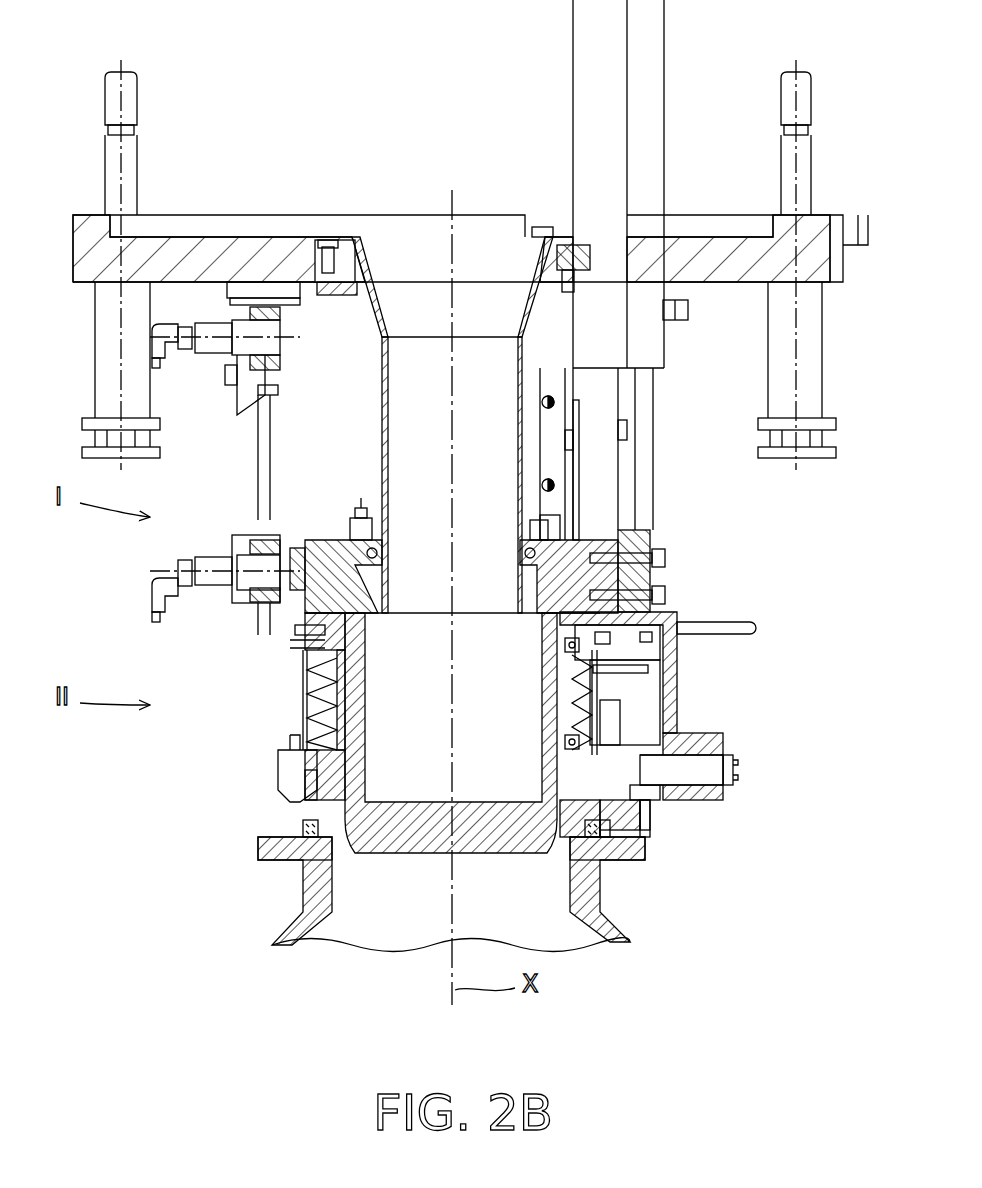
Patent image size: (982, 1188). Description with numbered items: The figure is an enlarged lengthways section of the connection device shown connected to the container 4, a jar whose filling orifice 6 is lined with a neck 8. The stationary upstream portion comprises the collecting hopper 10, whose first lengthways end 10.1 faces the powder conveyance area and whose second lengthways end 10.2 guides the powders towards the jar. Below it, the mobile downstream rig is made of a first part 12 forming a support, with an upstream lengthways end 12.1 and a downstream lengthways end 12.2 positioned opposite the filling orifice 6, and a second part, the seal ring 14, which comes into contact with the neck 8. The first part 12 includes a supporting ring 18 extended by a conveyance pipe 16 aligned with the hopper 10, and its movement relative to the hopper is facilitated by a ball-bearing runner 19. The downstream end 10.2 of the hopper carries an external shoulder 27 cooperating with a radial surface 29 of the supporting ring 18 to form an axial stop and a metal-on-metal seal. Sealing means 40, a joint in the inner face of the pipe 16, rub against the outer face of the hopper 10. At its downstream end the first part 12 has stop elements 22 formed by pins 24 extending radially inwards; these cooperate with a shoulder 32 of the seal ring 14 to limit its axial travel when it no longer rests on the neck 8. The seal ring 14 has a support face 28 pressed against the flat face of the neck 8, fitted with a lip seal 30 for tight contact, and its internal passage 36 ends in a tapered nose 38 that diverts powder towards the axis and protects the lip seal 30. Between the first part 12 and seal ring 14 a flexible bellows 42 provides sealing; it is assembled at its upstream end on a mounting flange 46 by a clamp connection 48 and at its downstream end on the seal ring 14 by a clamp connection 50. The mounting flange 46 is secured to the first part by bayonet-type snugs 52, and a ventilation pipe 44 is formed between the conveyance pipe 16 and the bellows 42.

The container 4 is at (248, 903).
The filling orifice 6 is at (337, 878).
The neck 8 is at (265, 853).
The collecting hopper 10 is at (377, 466).
The first lengthways end 10.1 is at (379, 245).
The second lengthways end 10.2 is at (527, 583).
The first part 12 is at (590, 528).
The upstream lengthways end 12.1 is at (528, 537).
The downstream lengthways end 12.2 is at (562, 835).
The seal ring 14 is at (658, 818).
The pipe 16 is at (538, 750).
The supporting ring 18 is at (662, 582).
The ball-bearing runner 19 is at (558, 462).
The stop elements 22 is at (740, 770).
The pins 24 is at (692, 763).
The external shoulder 27 is at (335, 542).
The support face 28 is at (580, 840).
The radial surface 29 is at (620, 543).
The lip seal 30 is at (600, 842).
The shoulder 32 is at (633, 730).
The internal passage 36 is at (555, 847).
The nose 38 is at (357, 834).
The sealing means 40 is at (357, 522).
The bellows 42 is at (306, 713).
The ventilation pipe 44 is at (340, 705).
The mounting flange 46 is at (302, 623).
The clamp connection 48 is at (293, 666).
The clamp connection 50 is at (272, 768).
The snugs 52 is at (619, 627).